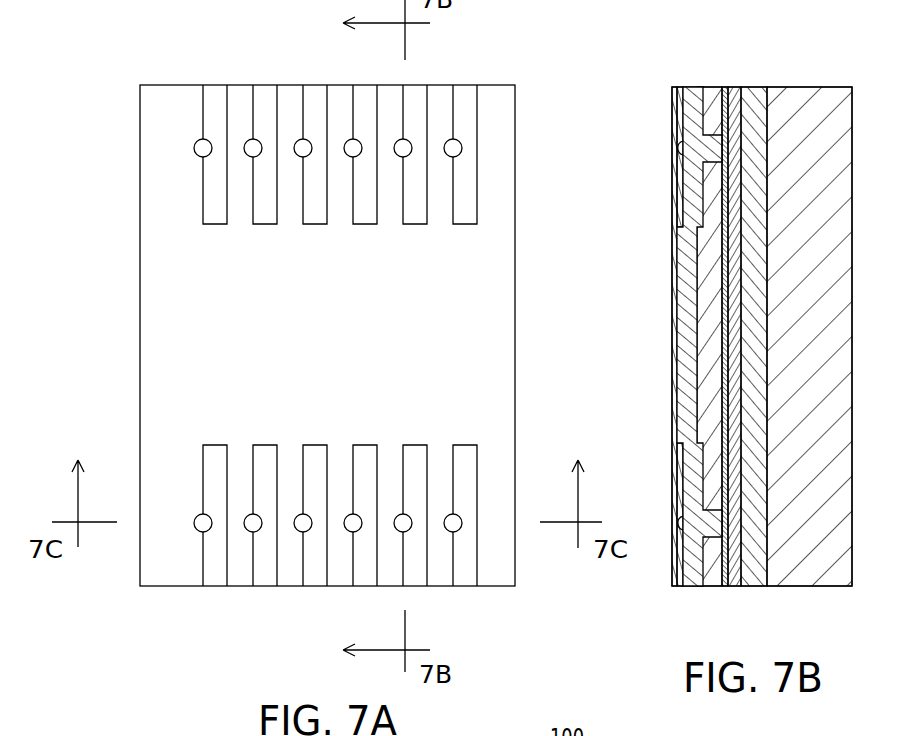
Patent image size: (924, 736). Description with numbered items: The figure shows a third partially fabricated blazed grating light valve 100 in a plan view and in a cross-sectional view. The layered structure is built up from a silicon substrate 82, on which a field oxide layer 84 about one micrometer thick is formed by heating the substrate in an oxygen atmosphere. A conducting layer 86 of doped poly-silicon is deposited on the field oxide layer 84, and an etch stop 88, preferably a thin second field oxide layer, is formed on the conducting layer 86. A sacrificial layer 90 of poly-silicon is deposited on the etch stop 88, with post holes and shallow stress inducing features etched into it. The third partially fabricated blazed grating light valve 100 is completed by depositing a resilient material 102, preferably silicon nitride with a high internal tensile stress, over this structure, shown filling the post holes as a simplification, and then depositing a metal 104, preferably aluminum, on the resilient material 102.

In FIG. 7A, the third partially fabricated blazed grating light valve 100 is at (125, 72).
In FIG. 7B, the third partially fabricated blazed grating light valve 100 is at (640, 70).
In FIG. 7B, the silicon substrate 82 is at (805, 87).
In FIG. 7B, the field oxide layer 84 is at (755, 588).
In FIG. 7B, the conducting layer 86 is at (733, 87).
In FIG. 7B, the etch stop 88 is at (724, 588).
In FIG. 7B, the sacrificial layer 90 is at (712, 87).
In FIG. 7B, the resilient material 102 is at (692, 588).
In FIG. 7B, the metal 104 is at (683, 87).